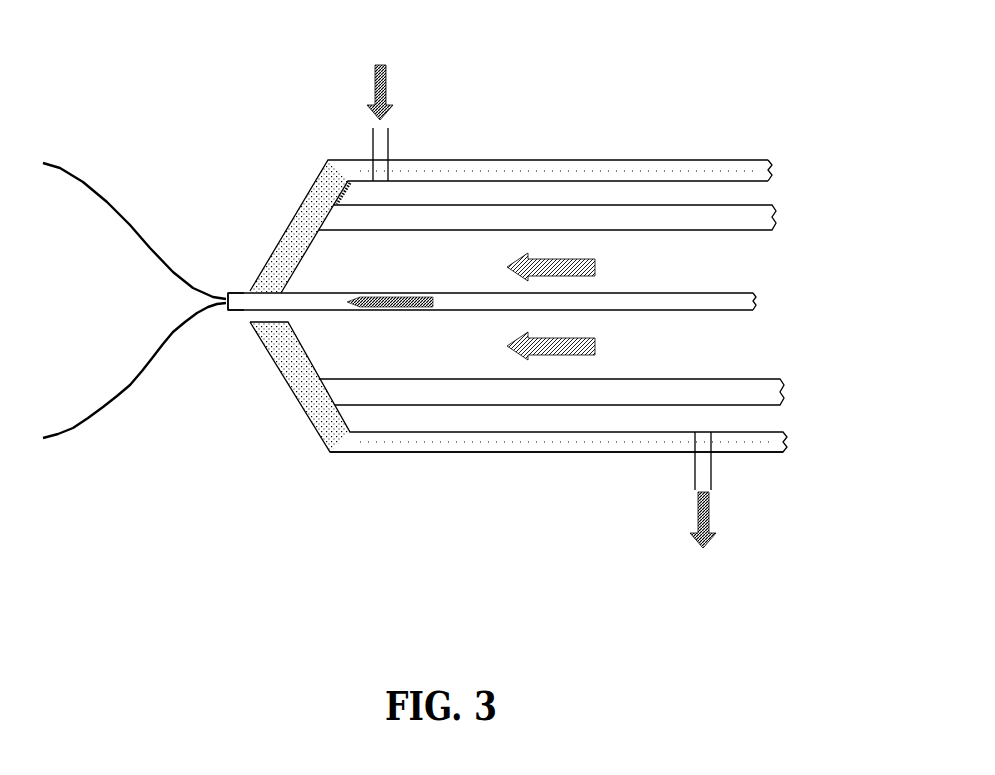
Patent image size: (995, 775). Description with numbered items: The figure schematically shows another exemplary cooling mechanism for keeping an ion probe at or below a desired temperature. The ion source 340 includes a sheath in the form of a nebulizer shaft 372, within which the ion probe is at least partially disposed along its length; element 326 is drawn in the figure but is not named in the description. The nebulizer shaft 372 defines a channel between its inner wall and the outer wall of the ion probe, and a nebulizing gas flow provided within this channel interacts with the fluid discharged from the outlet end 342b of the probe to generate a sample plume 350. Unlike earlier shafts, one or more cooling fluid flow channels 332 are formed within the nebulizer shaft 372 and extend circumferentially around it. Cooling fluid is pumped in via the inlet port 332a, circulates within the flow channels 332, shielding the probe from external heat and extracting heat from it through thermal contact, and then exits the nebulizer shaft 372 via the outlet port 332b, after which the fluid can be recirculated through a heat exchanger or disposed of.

The ion source 340 is at (637, 77).
The cooling fluid flow channels 332 is at (547, 195).
The inlet port 332a is at (379, 114).
The outlet port 332b is at (771, 490).
The sample capillary 326 is at (333, 312).
The outlet end 342b is at (243, 279).
The nebulizer shaft 372 is at (368, 452).
The sample plume 350 is at (134, 300).